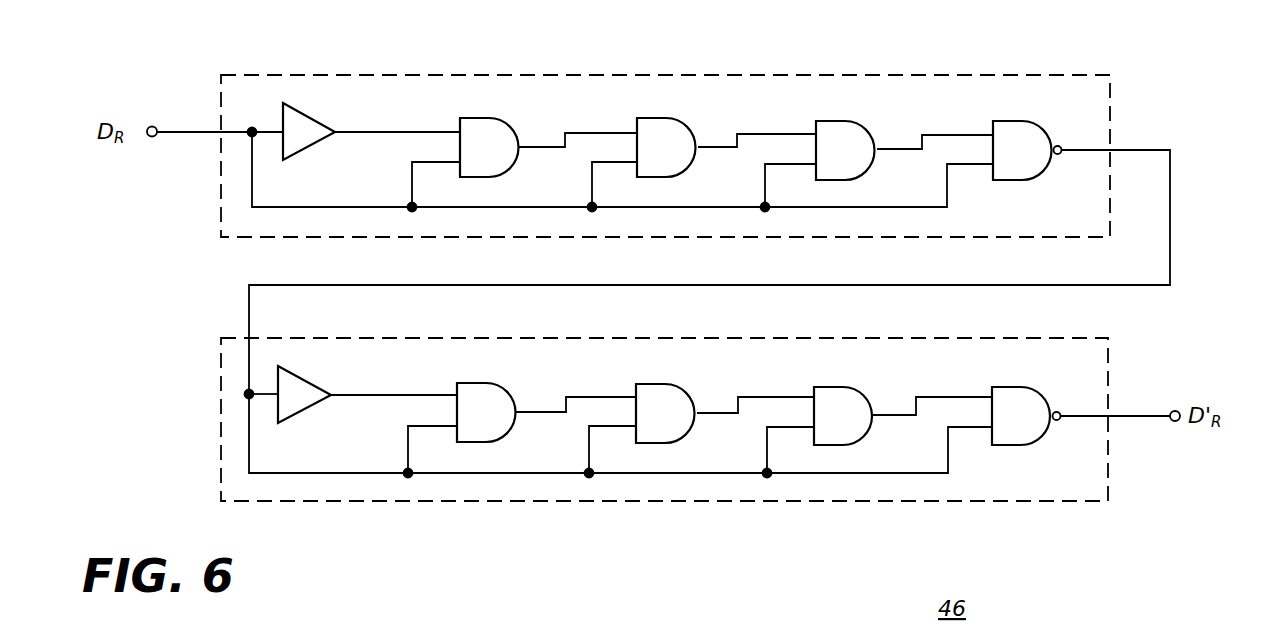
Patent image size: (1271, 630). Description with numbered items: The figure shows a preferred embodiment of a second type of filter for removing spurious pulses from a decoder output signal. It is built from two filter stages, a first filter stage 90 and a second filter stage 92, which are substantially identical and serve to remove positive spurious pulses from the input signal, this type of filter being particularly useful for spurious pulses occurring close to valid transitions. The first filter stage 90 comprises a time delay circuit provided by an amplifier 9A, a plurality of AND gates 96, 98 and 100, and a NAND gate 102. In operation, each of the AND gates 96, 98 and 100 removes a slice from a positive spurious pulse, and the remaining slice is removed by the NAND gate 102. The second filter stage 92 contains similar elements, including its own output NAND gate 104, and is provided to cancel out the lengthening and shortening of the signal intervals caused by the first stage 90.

The first filter stage 90 is at (1110, 77).
The second filter stage 92 is at (221, 338).
The amplifier 9A is at (304, 114).
The AND gate 96 is at (489, 118).
The AND gate 98 is at (665, 118).
The AND gate 100 is at (841, 121).
The NAND gate 102 is at (1021, 121).
The output NAND gate 104 is at (1012, 387).